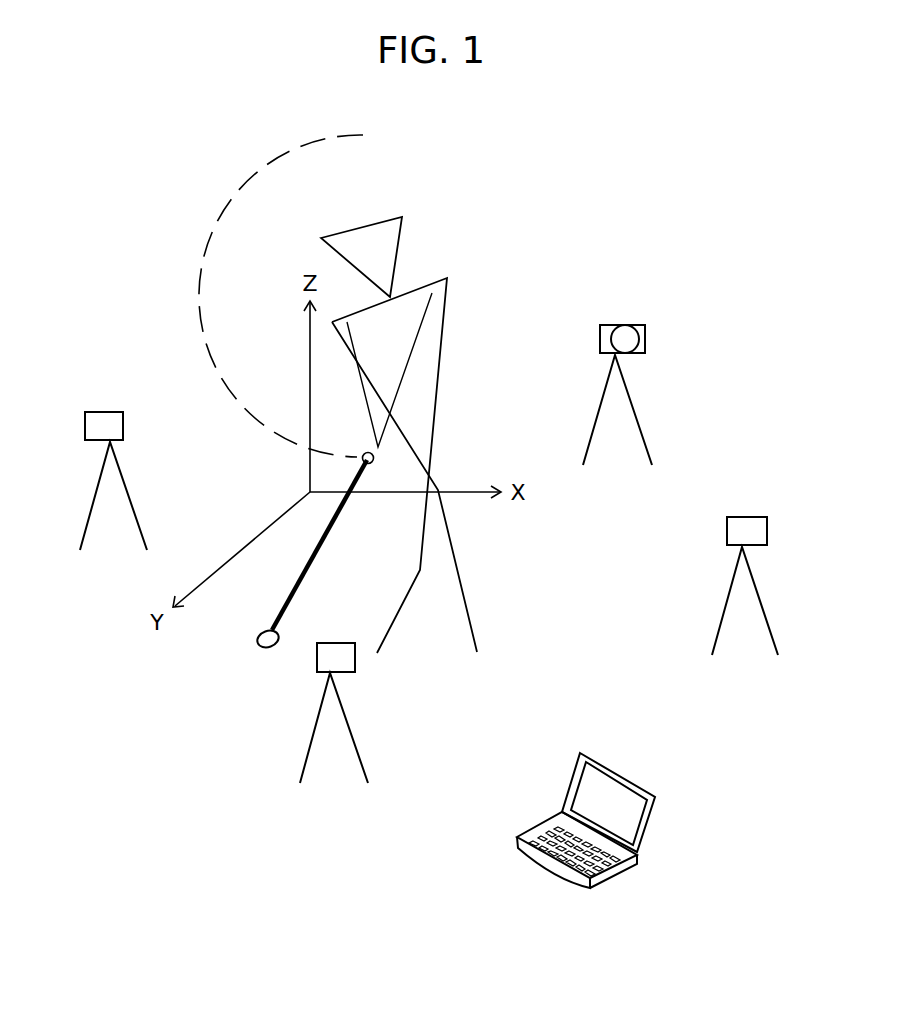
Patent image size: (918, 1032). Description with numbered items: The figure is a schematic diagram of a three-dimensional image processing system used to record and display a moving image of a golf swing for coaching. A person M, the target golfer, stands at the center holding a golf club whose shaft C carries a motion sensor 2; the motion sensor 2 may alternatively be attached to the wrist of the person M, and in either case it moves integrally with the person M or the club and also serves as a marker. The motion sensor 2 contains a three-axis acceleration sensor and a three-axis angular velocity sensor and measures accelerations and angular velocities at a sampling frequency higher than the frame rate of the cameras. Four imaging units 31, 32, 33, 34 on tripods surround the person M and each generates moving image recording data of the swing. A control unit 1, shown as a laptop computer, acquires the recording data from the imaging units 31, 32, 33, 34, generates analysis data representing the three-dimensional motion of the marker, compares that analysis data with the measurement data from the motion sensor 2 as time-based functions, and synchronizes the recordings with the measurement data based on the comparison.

The control unit 1 is at (637, 782).
The motion sensor 2 is at (374, 454).
The imaging unit 31 is at (640, 325).
The imaging unit 32 is at (757, 517).
The imaging unit 33 is at (355, 662).
The imaging unit 34 is at (102, 412).
The person M is at (443, 340).
The shaft C is at (318, 562).